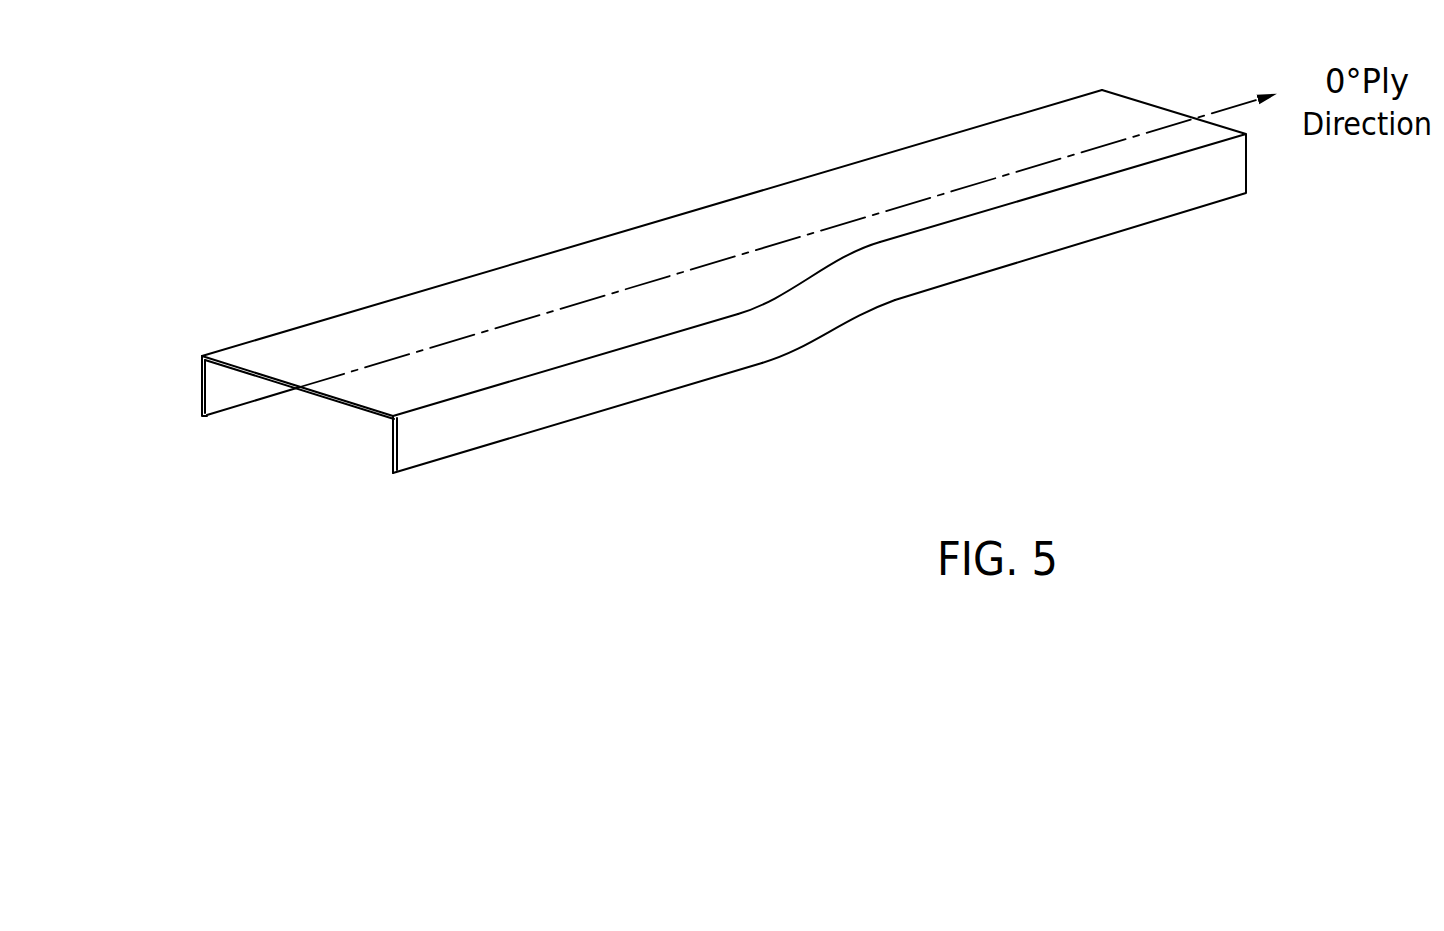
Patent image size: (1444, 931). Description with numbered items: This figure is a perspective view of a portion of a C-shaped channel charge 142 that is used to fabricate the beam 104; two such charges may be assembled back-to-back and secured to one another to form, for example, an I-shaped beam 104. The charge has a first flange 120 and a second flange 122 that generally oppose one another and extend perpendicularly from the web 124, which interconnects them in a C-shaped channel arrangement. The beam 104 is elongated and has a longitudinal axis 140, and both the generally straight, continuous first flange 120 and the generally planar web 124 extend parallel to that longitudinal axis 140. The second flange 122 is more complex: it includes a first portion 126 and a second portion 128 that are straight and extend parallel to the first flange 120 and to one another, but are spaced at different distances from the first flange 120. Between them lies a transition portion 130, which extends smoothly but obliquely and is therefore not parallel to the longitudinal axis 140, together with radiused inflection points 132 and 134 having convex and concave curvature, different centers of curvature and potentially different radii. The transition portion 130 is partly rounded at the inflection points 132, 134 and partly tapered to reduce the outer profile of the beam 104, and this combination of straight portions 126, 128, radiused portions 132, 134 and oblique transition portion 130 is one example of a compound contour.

The beam 104 is at (687, 277).
The first flange 120 is at (202, 386).
The second flange 122 is at (392, 452).
The web 124 is at (318, 397).
The first portion 126 is at (547, 430).
The second portion 128 is at (1118, 231).
The transition portion 130 is at (822, 334).
The inflection point 132 is at (763, 363).
The inflection point 134 is at (876, 307).
The longitudinal axis 140 is at (1230, 107).
The C-shaped channel charge 142 is at (628, 229).